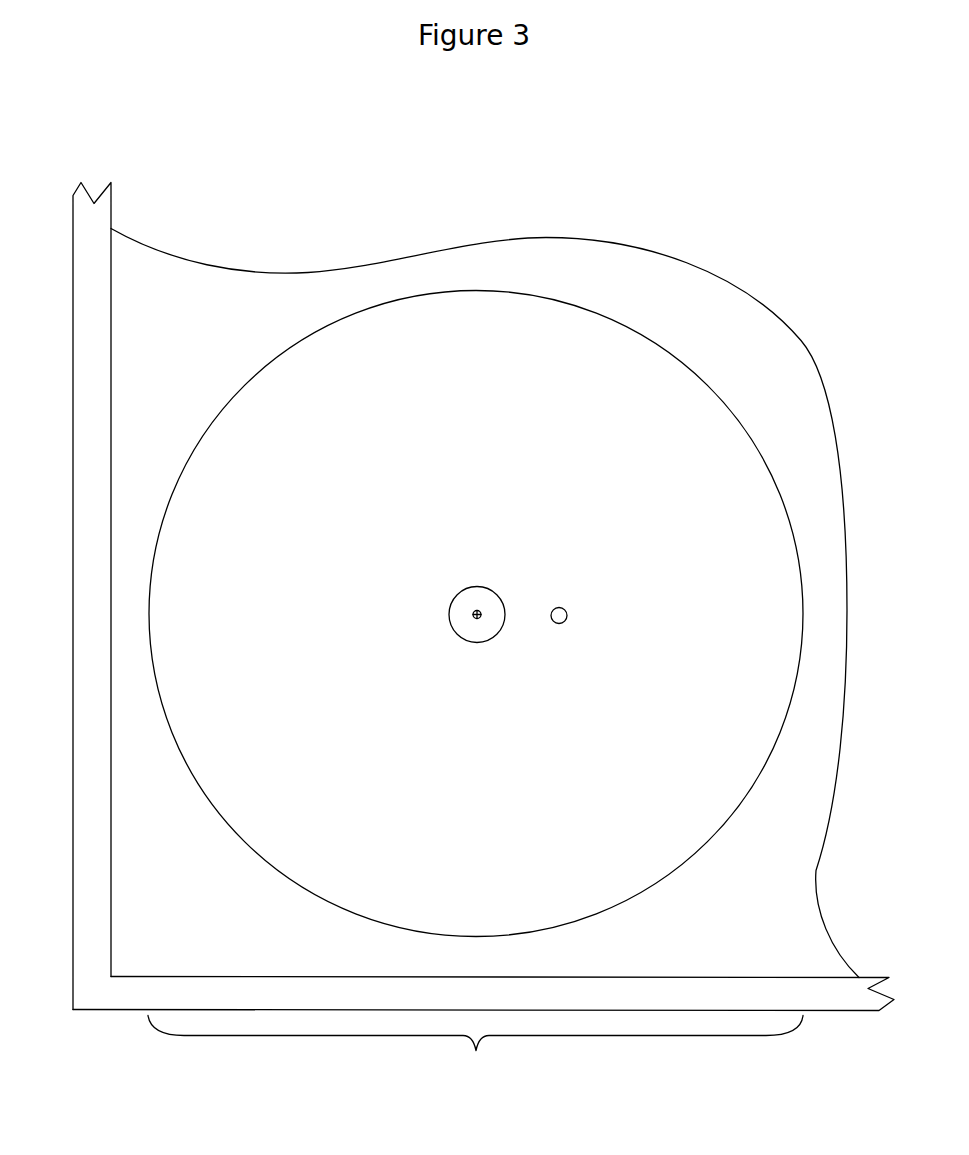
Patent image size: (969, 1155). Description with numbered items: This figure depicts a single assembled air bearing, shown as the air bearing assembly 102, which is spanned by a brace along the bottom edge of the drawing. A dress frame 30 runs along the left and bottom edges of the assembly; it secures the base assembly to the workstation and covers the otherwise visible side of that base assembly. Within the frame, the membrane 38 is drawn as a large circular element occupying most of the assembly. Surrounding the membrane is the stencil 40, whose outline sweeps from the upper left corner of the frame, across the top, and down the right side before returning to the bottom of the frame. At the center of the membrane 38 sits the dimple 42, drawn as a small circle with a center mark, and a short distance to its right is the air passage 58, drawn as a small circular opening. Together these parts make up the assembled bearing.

The dress frame 30 is at (97, 218).
The membrane 38 is at (401, 388).
The stencil 40 is at (770, 408).
The dimple 42 is at (480, 603).
The air passage 58 is at (558, 608).
The air bearing assembly 102 is at (483, 1034).